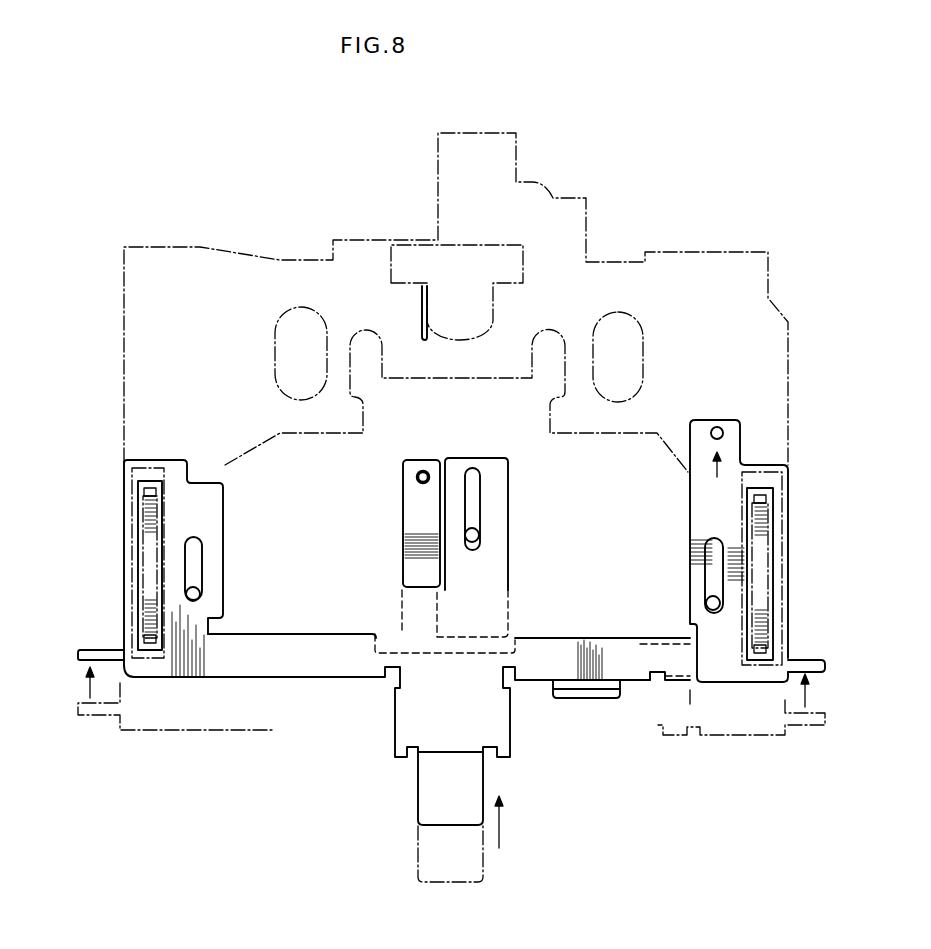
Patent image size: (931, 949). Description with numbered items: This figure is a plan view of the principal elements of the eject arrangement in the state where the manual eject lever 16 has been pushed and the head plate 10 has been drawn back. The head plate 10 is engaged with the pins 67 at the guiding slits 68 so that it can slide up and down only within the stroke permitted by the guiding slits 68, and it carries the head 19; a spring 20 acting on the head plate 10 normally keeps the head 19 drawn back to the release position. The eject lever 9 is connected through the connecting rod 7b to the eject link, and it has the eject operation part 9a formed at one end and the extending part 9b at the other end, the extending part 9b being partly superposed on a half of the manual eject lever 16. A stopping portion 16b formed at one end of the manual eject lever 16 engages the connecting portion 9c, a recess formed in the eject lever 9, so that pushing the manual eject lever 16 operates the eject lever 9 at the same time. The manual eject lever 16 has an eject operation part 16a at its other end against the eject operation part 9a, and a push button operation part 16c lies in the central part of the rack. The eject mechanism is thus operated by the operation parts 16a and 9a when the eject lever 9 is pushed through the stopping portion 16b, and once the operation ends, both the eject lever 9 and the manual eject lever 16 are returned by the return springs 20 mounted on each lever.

The head plate 10 is at (296, 436).
The head 19 is at (479, 341).
The eject lever 9 is at (708, 533).
The connecting rod 7b is at (718, 427).
The eject operation part 9a is at (806, 660).
The extending part 9b is at (578, 637).
The connecting portion 9c is at (682, 672).
The return spring 20 is at (148, 522).
The pin 67 is at (205, 561).
The guiding slit 68 is at (202, 594).
The manual eject lever 16 is at (338, 634).
The eject operation part 16a is at (101, 650).
The stopping portion 16b is at (668, 686).
The push button operation part 16c is at (425, 798).